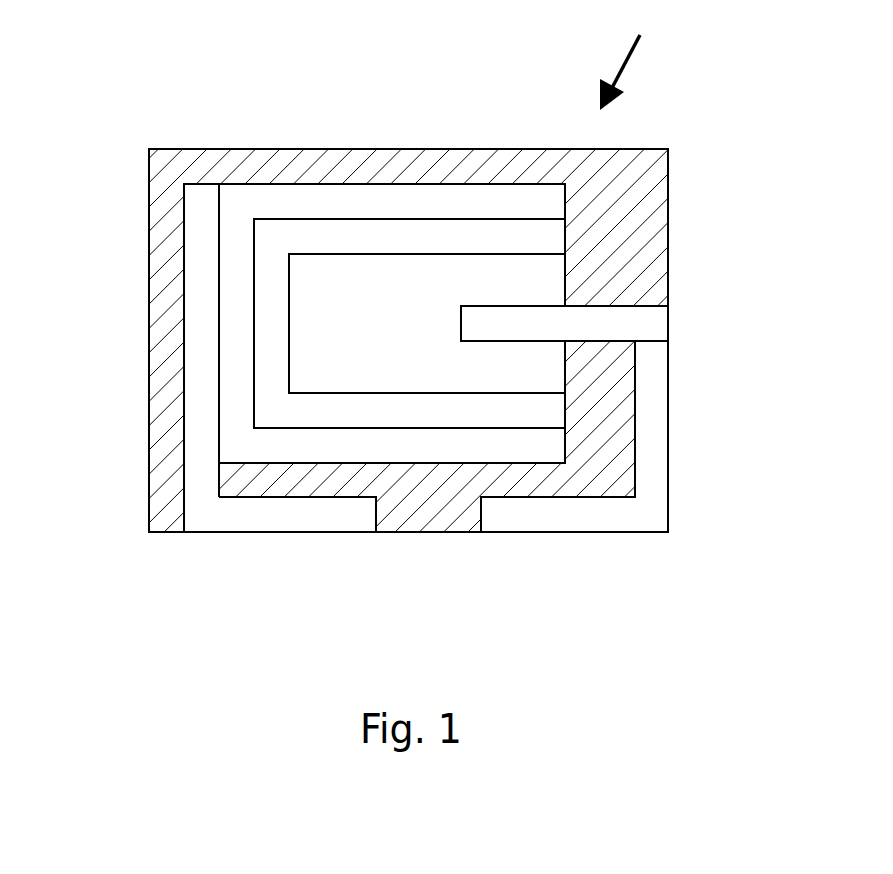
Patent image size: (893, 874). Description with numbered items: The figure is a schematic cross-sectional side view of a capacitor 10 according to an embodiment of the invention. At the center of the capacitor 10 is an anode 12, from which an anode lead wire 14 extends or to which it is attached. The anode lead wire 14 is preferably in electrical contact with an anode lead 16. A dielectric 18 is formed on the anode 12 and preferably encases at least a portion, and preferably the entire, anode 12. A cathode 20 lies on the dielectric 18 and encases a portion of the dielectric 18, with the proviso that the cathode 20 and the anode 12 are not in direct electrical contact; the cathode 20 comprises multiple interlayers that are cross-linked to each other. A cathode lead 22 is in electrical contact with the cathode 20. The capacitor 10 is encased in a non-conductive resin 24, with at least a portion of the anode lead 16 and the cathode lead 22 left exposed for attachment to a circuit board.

The capacitor 10 is at (627, 58).
The anode 12 is at (325, 287).
The anode lead wire 14 is at (642, 322).
The anode lead 16 is at (567, 520).
The dielectric 18 is at (418, 237).
The cathode 20 is at (240, 202).
The cathode lead 22 is at (208, 427).
The non-conductive resin 24 is at (168, 313).